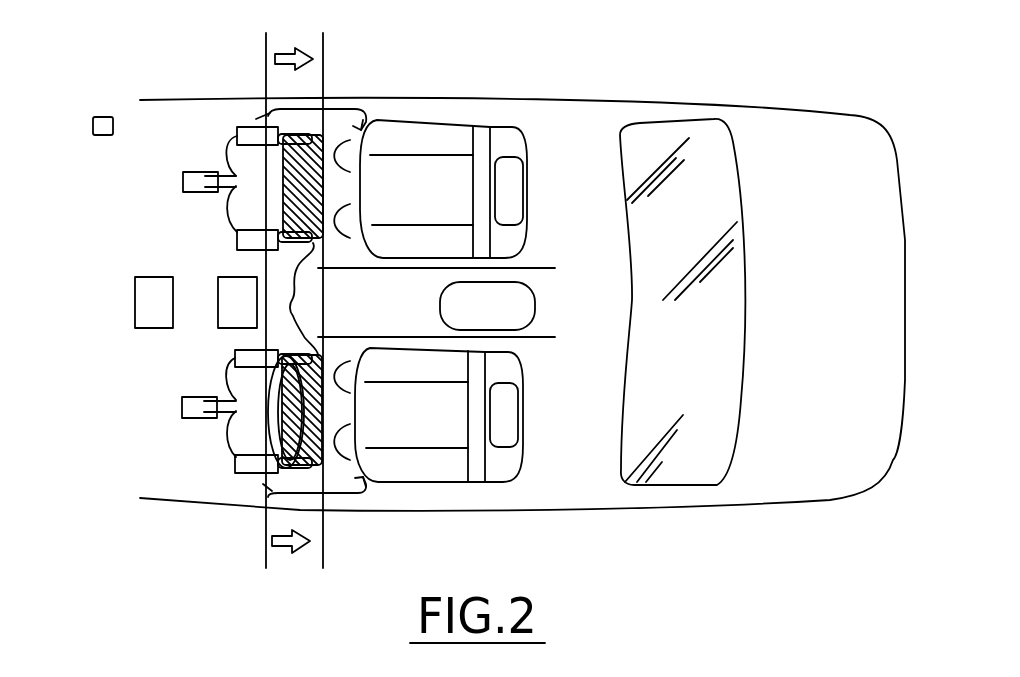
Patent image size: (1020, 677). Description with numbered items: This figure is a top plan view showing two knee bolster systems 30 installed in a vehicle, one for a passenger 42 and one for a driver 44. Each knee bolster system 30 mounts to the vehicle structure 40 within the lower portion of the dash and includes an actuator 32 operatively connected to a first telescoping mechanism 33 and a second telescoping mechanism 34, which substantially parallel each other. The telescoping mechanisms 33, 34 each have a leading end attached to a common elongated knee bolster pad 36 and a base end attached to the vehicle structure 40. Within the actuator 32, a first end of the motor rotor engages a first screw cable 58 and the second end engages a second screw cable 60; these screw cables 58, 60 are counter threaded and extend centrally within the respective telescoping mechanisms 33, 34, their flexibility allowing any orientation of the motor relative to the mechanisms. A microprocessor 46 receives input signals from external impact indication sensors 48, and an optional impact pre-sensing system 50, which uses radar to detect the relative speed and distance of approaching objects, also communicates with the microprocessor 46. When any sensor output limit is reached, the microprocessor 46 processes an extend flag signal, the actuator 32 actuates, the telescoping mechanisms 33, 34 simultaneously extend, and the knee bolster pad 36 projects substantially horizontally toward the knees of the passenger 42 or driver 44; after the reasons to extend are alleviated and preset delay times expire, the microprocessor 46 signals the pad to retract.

The knee bolster system 30 is at (118, 371).
The actuator 32 is at (183, 182).
The first telescoping mechanism 33 is at (237, 130).
The second telescoping mechanism 34 is at (252, 237).
The knee bolster pad 36 is at (318, 299).
The vehicle structure 40 is at (210, 98).
The passenger 42 is at (432, 203).
The driver 44 is at (432, 425).
The microprocessor 46 is at (165, 316).
The external impact indication sensor 48 is at (95, 118).
The impact pre-sensing system 50 is at (249, 316).
The first screw cable 58 is at (230, 150).
The second screw cable 60 is at (230, 213).